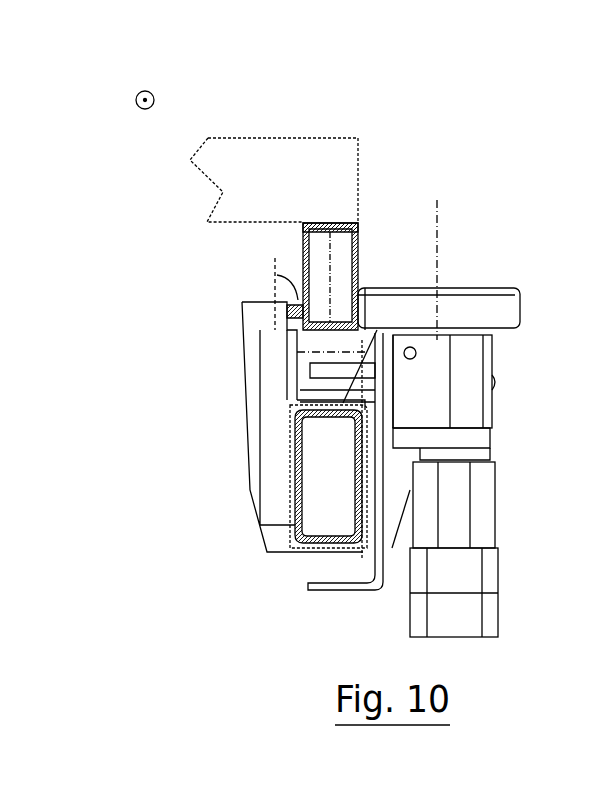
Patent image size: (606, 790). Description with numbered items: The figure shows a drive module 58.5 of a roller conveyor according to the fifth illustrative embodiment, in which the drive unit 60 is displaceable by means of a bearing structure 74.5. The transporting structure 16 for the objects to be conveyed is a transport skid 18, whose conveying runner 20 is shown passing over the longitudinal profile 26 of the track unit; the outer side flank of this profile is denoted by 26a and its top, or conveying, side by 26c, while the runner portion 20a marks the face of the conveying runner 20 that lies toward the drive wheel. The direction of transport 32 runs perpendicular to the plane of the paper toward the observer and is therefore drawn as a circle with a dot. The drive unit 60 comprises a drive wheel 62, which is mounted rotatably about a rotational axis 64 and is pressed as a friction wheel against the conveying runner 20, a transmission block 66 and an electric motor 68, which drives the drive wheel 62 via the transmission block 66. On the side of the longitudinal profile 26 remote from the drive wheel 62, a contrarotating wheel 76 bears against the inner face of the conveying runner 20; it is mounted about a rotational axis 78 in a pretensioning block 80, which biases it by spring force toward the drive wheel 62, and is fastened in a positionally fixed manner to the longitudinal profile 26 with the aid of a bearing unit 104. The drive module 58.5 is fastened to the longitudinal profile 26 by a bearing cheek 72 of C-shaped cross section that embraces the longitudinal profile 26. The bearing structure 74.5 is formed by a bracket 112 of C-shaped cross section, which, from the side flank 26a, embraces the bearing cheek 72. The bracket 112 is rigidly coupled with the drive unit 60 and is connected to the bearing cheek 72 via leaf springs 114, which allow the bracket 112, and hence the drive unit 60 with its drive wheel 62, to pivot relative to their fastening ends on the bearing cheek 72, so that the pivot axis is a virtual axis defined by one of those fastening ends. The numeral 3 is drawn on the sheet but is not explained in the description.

The vehicle 3 is at (600, 121).
The transporting structure 16 is at (236, 150).
The transport skid 18 is at (303, 150).
The runner 20 is at (300, 244).
The profile wall 20a is at (360, 250).
The longitudinal profile 26 is at (315, 485).
The outer side flank 26a is at (350, 480).
The top side 26c is at (383, 322).
The direction of transport 32 is at (138, 95).
The drive module 58.5 is at (489, 92).
The drive unit 60 is at (525, 585).
The drive wheel 62 is at (490, 310).
The rotational axis 64 is at (437, 272).
The transmission block 66 is at (470, 410).
The motor 68 is at (498, 556).
The bearing cheek 72 is at (330, 418).
The bearing structure 74.5 is at (288, 607).
The contrarotating wheel 76 is at (287, 282).
The rotational axis 78 is at (278, 265).
The pretensioning block 80 is at (265, 318).
The bearing unit 104 is at (270, 355).
The bracket 112 is at (363, 583).
The leaf springs 114 is at (300, 395).